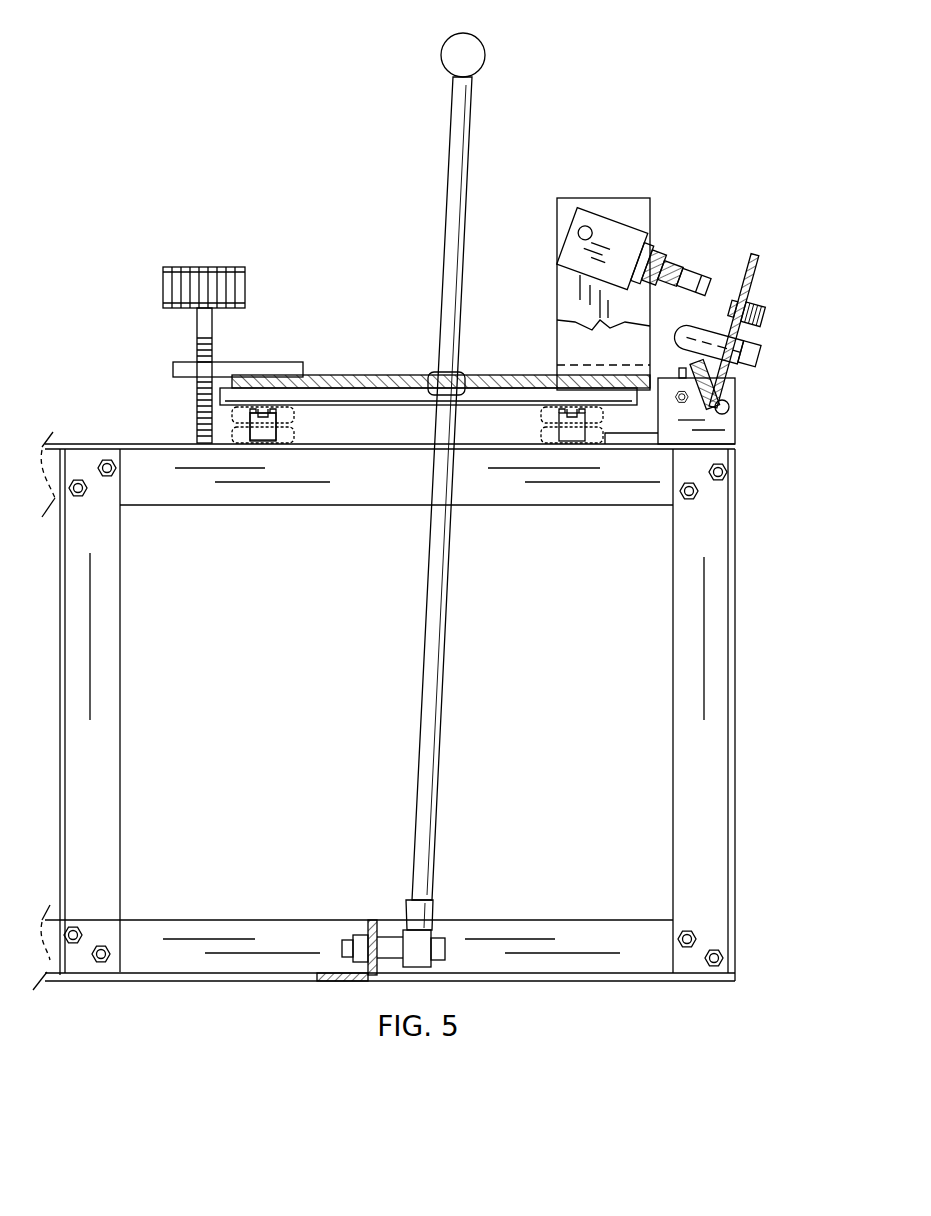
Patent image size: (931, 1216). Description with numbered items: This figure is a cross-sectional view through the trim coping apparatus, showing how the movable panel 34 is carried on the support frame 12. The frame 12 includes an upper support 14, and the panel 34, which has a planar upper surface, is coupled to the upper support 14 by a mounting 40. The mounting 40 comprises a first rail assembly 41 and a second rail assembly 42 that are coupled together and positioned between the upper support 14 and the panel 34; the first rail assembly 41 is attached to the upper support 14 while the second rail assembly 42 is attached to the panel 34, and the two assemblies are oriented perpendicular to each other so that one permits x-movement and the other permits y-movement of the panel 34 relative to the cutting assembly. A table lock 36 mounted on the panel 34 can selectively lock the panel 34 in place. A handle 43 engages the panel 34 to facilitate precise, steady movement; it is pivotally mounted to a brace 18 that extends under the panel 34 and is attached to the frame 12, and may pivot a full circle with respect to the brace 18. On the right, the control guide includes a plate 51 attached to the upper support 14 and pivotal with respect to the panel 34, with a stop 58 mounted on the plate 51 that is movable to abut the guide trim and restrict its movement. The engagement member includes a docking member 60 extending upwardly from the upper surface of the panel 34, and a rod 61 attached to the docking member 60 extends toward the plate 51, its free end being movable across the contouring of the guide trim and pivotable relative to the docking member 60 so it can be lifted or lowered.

The support frame 12 is at (733, 978).
The upper support 14 is at (137, 443).
The brace 18 is at (362, 920).
The panel 34 is at (375, 380).
The table lock 36 is at (188, 266).
The mounting 40 is at (314, 438).
The first rail assembly 41 is at (237, 417).
The second rail assembly 42 is at (320, 400).
The handle 43 is at (428, 862).
The plate 51 is at (755, 262).
The stop 58 is at (703, 325).
The docking member 60 is at (570, 197).
The rod 61 is at (690, 280).